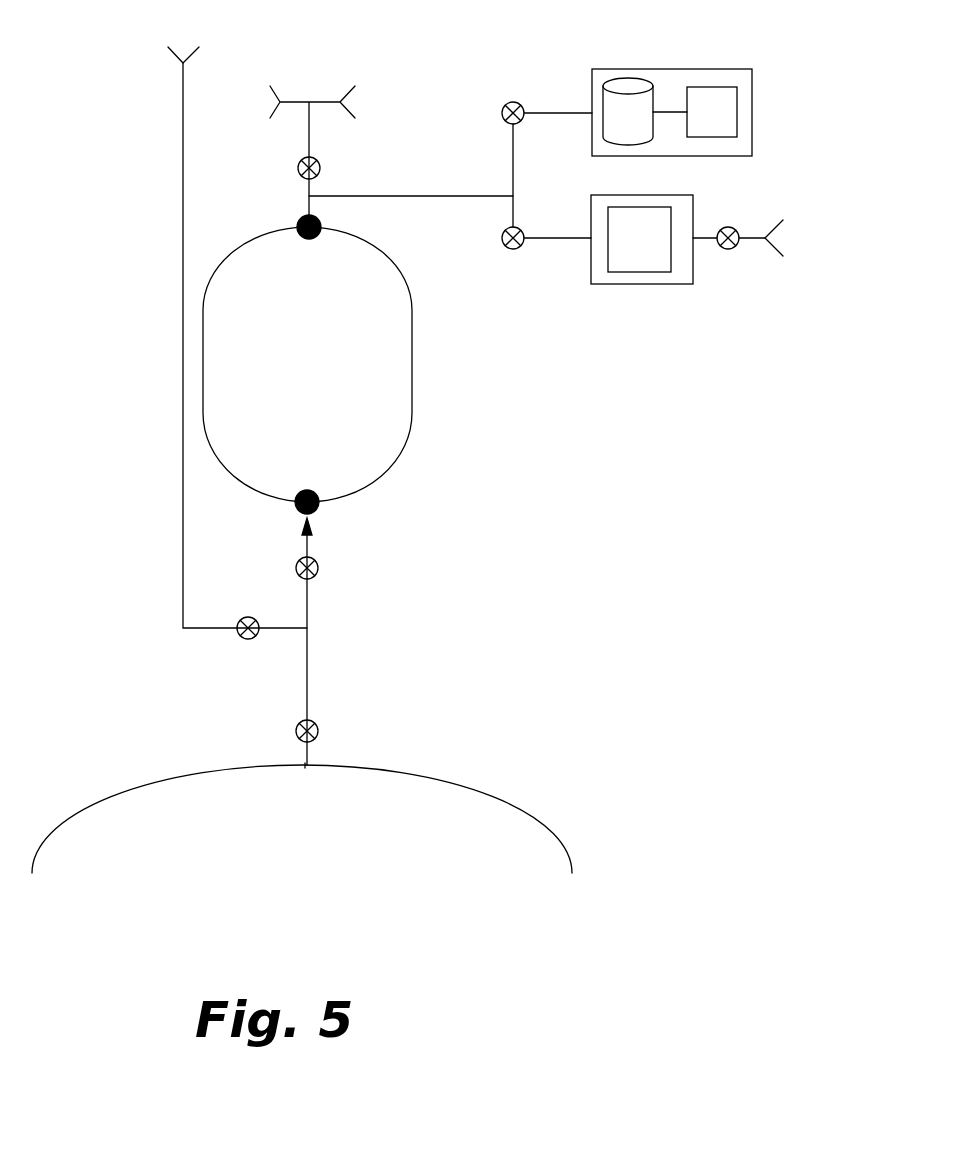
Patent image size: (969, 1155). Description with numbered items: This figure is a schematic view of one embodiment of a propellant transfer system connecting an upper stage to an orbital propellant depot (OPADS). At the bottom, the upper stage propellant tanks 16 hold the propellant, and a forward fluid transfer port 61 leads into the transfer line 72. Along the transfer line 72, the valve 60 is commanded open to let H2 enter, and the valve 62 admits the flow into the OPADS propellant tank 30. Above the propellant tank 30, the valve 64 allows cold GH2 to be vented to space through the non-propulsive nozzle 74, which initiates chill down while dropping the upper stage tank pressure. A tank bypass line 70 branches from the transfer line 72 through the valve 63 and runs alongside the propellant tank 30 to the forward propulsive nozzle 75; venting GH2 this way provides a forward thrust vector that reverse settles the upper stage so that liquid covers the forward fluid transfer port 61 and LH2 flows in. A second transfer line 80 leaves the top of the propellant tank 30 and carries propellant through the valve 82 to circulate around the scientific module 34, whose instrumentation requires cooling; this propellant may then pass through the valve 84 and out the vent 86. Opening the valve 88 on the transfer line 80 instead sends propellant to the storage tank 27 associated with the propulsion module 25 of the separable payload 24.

The propellant tanks 16 is at (495, 798).
The separable payload 24 is at (660, 69).
The propulsion module 25 is at (712, 120).
The storage tank 27 is at (612, 110).
The propellant tank 30 is at (413, 373).
The scientific module 34 is at (639, 246).
The valve 60 is at (320, 729).
The forward fluid transfer port 61 is at (305, 763).
The valve 62 is at (320, 568).
The valve 63 is at (248, 617).
The valve 64 is at (322, 167).
The tank bypass line 70 is at (180, 58).
The transfer line 72 is at (305, 683).
The non-propulsive nozzle 74 is at (325, 102).
The forward propulsive nozzle 75 is at (141, 67).
The transfer line 80 is at (478, 198).
The valve 82 is at (520, 248).
The valve 84 is at (732, 227).
The vent 86 is at (770, 255).
The valve 88 is at (514, 100).